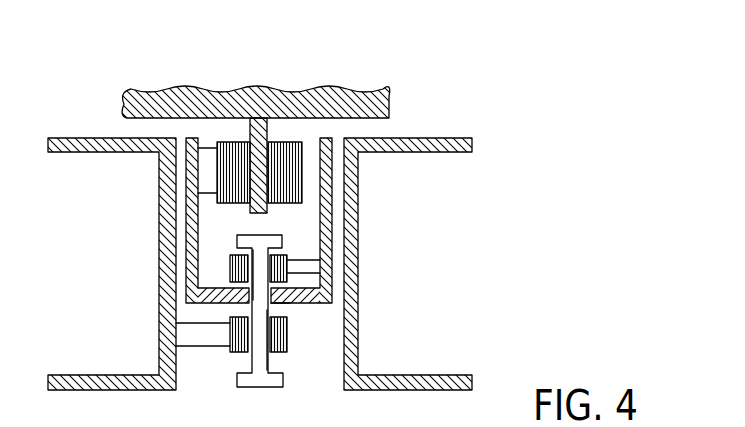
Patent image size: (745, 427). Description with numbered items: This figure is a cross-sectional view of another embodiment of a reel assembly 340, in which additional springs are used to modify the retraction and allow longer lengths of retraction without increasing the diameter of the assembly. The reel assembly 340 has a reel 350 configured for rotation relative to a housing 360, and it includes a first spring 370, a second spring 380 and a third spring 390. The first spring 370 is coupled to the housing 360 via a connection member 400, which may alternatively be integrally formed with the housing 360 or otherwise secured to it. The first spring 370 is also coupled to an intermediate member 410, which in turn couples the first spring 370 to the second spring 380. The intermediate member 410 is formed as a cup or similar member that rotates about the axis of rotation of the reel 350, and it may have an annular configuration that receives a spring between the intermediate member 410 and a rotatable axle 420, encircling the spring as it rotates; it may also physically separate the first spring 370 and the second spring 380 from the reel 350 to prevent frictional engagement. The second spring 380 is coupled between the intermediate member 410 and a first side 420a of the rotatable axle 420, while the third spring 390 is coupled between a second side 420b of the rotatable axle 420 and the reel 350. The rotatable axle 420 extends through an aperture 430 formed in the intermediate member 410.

The reel assembly 340 is at (448, 94).
The reel 350 is at (117, 373).
The housing 360 is at (166, 96).
The first spring 370 is at (305, 170).
The second spring 380 is at (229, 268).
The third spring 390 is at (291, 348).
The connection member 400 is at (249, 211).
The intermediate member 410 is at (185, 137).
The rotatable axle 420 is at (258, 368).
The first side of the rotatable axle 420a is at (258, 347).
The second side of the rotatable axle 420b is at (258, 260).
The aperture 430 is at (276, 306).